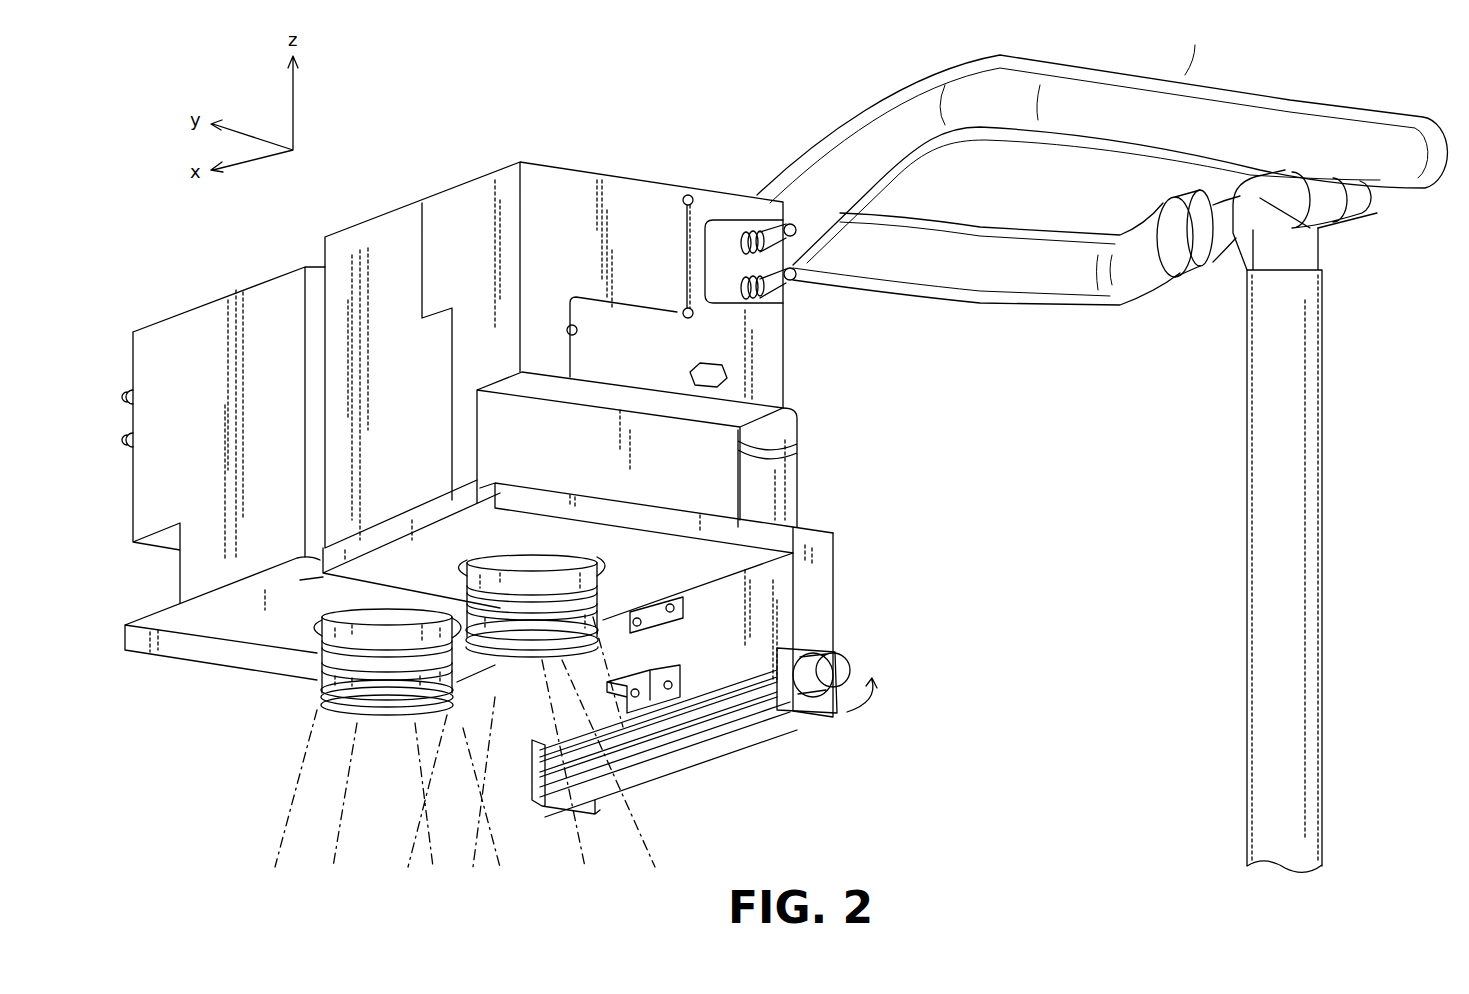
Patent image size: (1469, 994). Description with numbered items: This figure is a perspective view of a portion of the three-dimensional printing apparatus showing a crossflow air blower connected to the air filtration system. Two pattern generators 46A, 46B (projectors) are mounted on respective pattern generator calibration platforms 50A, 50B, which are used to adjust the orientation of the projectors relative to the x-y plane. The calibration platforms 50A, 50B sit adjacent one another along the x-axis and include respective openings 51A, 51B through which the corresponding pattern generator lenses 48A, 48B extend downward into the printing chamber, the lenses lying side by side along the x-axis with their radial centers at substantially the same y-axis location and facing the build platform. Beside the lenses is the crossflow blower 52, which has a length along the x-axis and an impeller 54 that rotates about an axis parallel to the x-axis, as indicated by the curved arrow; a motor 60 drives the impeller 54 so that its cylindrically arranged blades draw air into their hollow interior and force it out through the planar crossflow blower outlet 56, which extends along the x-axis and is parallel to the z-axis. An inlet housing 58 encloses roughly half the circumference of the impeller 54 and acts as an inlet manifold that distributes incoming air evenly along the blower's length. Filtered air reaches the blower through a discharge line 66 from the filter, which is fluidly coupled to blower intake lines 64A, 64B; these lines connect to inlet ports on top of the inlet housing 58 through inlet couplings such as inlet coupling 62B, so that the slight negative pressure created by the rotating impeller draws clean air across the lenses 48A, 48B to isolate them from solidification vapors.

The pattern generator 46A is at (210, 467).
The pattern generator 46B is at (433, 400).
The pattern generator lens 48A is at (340, 718).
The pattern generator lens 48B is at (567, 643).
The pattern generator calibration platform 50A is at (178, 655).
The pattern generator calibration platform 50B is at (793, 553).
The opening 51A is at (314, 628).
The opening 51B is at (462, 568).
The crossflow blower 52 is at (830, 655).
The impeller 54 is at (757, 697).
The crossflow blower outlet 56 is at (720, 720).
The inlet housing 58 is at (823, 626).
The motor 60 is at (848, 665).
The inlet coupling 62B is at (800, 470).
The blower intake line 64A is at (955, 255).
The blower intake line 64B is at (1170, 103).
The discharge line 66 is at (1290, 508).